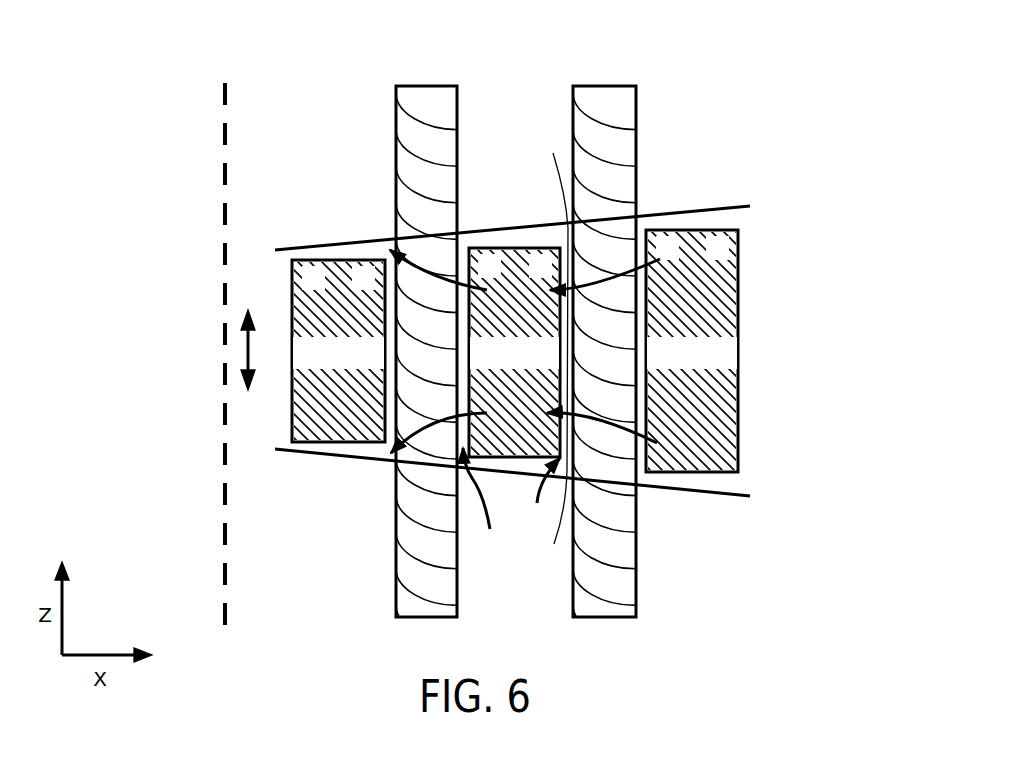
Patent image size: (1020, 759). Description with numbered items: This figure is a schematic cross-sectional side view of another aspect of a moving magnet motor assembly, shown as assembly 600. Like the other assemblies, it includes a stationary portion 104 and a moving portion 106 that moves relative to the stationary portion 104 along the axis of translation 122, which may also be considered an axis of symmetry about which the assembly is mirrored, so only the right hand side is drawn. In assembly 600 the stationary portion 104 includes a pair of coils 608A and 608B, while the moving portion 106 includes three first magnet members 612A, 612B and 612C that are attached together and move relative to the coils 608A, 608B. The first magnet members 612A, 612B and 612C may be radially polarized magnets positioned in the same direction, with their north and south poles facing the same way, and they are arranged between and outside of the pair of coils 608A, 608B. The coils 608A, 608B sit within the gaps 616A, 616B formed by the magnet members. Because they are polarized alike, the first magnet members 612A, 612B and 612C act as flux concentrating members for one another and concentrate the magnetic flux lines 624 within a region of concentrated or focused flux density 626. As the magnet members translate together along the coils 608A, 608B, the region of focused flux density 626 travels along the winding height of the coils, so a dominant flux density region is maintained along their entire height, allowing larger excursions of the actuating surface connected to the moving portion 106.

The assembly 600 is at (810, 70).
The stationary portion 104 is at (648, 105).
The moving portion 106 is at (765, 276).
The axis of translation 122 is at (227, 137).
The coil 608A is at (431, 85).
The coil 608B is at (608, 85).
The first magnet member 612A is at (338, 259).
The first magnet member 612B is at (512, 247).
The first magnet member 612C is at (693, 230).
The gap 616A is at (489, 503).
The gap 616B is at (534, 493).
The magnetic flux lines 624 is at (551, 351).
The region of concentrated or focused flux density 626 is at (705, 496).